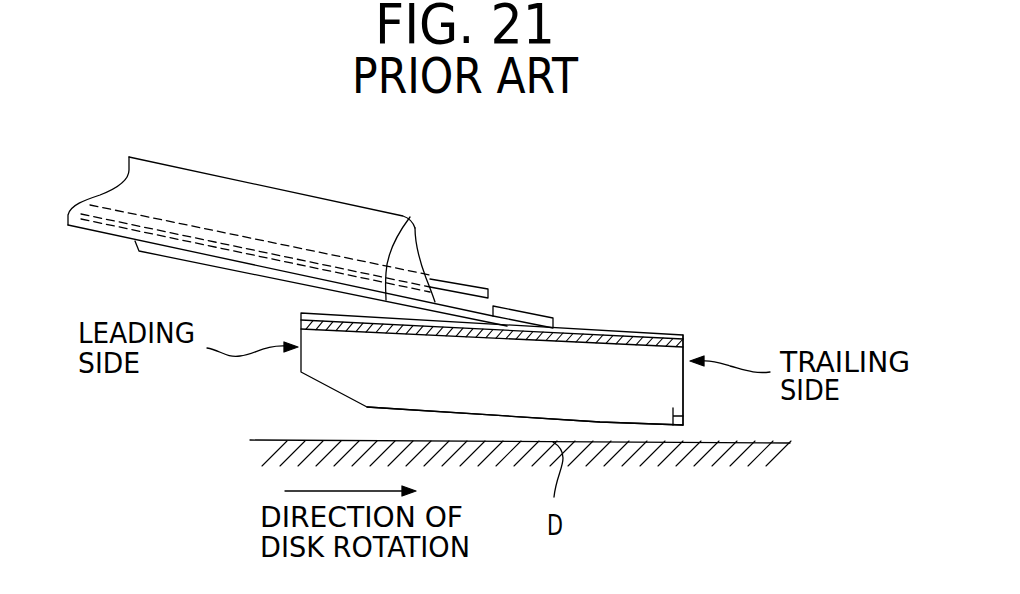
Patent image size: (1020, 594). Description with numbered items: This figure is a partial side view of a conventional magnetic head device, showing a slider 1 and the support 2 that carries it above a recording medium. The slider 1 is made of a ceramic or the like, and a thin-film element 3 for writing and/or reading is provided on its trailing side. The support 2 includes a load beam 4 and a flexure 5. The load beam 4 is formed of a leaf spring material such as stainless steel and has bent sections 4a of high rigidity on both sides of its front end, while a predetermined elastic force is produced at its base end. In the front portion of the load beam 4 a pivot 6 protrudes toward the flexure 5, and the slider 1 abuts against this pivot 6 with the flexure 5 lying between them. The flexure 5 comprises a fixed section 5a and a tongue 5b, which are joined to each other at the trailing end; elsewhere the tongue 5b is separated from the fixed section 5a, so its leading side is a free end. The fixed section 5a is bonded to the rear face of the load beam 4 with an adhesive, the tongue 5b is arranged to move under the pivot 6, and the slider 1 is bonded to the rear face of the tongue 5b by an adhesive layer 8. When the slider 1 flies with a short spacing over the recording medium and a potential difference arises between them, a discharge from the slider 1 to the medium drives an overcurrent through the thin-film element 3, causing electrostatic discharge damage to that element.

The slider 1 is at (637, 367).
The support 2 is at (462, 205).
The thin-film element 3 is at (684, 413).
The load beam 4 is at (287, 225).
The bent sections 4a is at (202, 190).
The flexure 5 is at (567, 328).
The fixed section 5a is at (415, 228).
The tongue 5b is at (608, 328).
The pivot 6 is at (490, 322).
The adhesive layer 8 is at (660, 340).